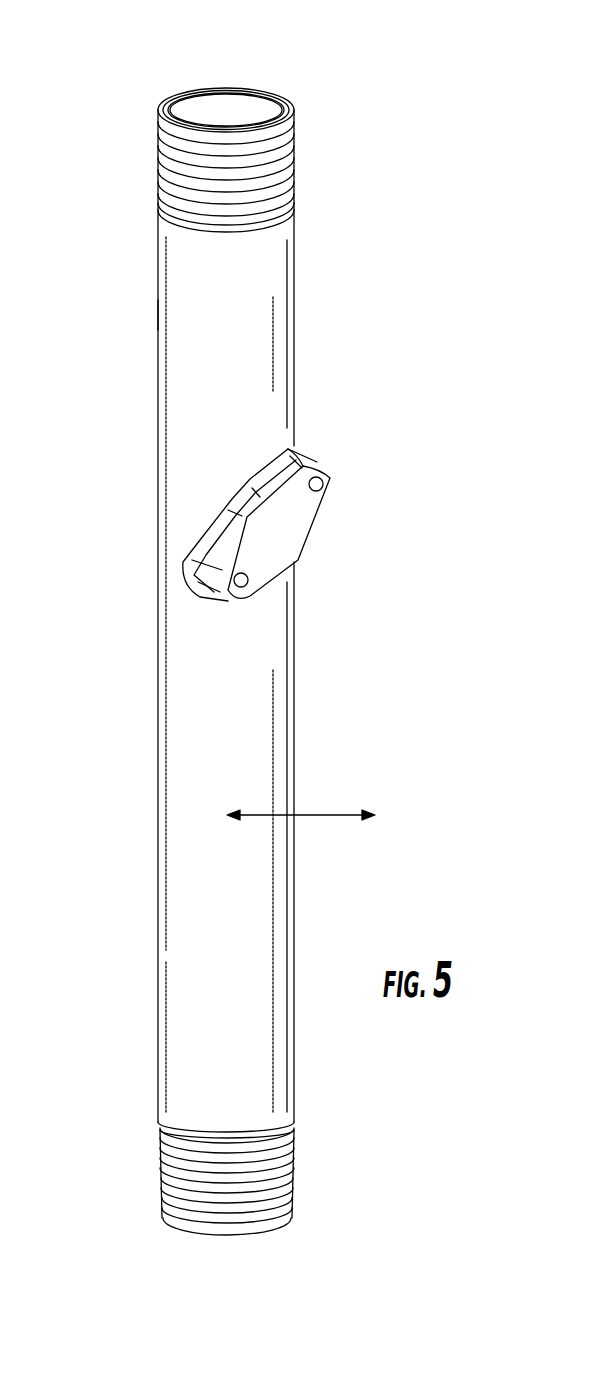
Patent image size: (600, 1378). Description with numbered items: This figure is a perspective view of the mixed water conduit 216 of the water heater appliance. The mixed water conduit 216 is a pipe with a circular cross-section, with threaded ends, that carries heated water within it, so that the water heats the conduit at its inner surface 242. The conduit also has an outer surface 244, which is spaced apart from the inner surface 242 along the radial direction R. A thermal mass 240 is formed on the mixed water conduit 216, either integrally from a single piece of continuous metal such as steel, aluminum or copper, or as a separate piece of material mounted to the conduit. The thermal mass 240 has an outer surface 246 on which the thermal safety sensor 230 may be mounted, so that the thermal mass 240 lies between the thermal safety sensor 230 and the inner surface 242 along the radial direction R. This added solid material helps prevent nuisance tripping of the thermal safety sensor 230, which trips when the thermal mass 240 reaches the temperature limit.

The mixed water conduit 216 is at (269, 625).
The thermal safety sensor 230 is at (256, 118).
The thermal mass 240 is at (297, 506).
The inner surface 242 is at (184, 108).
The outer surface 244 is at (158, 316).
The outer surface of thermal mass 246 is at (285, 535).
The radial direction R is at (327, 813).